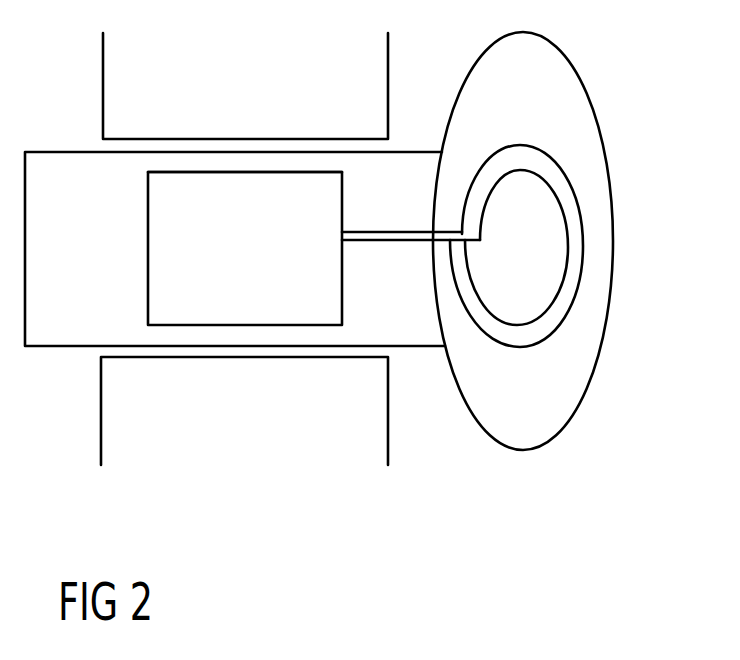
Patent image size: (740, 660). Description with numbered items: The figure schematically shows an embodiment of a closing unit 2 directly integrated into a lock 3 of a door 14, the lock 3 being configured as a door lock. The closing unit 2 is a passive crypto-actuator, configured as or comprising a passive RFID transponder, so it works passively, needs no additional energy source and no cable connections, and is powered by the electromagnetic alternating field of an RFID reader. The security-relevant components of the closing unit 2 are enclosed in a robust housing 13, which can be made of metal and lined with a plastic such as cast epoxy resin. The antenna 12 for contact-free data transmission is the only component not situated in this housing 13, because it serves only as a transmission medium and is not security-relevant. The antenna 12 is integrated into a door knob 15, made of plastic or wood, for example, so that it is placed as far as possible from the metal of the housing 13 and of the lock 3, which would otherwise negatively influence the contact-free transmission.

The closing unit 2 is at (172, 258).
The lock 3 is at (353, 150).
The antenna 12 is at (578, 217).
The housing 13 is at (217, 170).
The door 14 is at (122, 402).
The door knob 15 is at (587, 332).